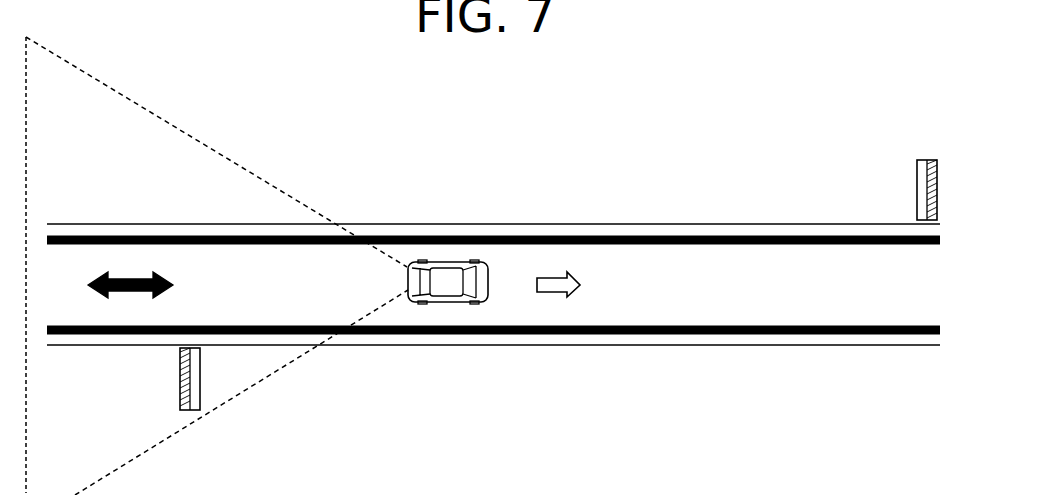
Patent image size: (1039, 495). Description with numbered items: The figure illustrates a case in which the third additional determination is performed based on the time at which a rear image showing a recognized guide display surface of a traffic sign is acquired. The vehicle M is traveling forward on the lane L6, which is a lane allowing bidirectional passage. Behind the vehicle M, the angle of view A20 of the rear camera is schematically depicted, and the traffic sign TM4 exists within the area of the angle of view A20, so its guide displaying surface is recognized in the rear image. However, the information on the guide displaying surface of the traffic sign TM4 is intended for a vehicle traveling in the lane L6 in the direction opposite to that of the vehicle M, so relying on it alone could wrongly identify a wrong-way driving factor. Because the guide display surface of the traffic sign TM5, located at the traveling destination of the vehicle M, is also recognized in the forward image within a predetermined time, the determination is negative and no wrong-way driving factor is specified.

The angle of view of the rear camera A20 is at (285, 368).
The lane L6 is at (82, 252).
The vehicle M is at (445, 268).
The traffic sign TM5 is at (917, 195).
The traffic sign TM4 is at (200, 375).